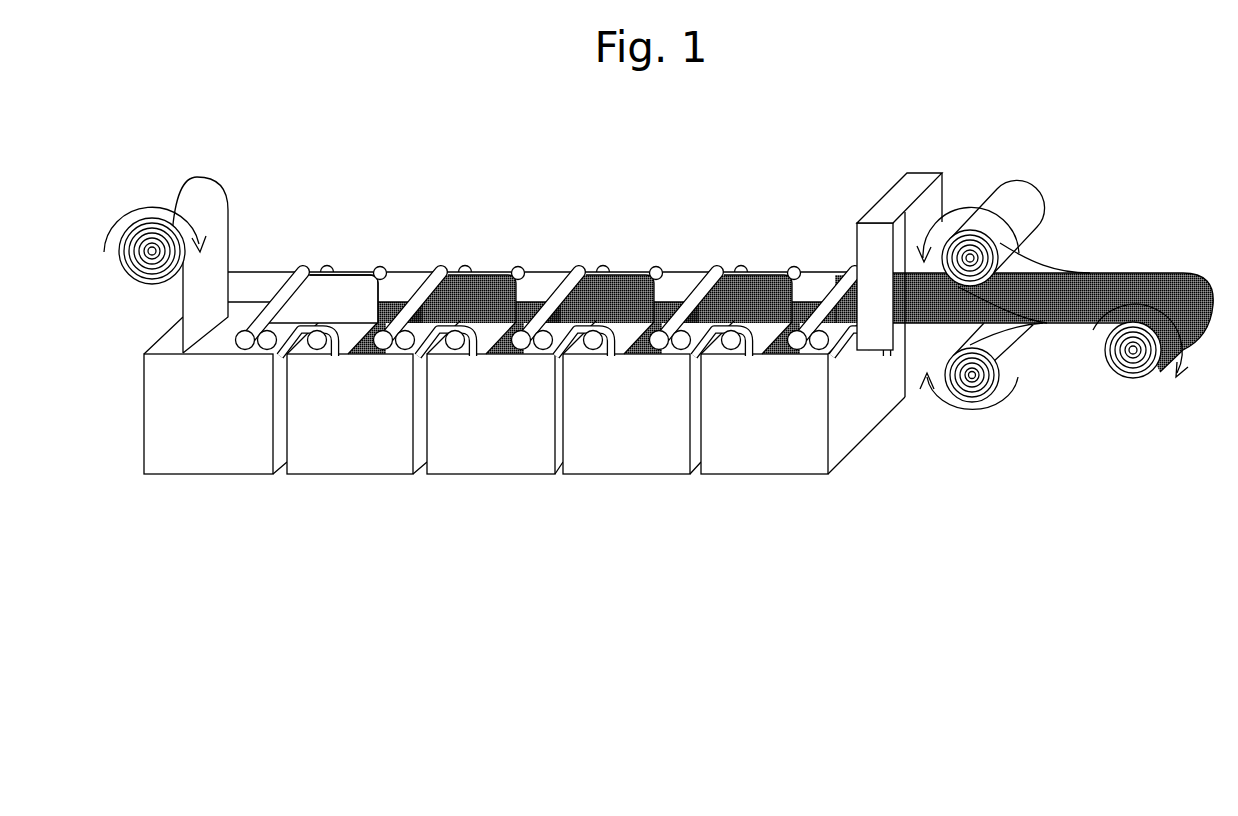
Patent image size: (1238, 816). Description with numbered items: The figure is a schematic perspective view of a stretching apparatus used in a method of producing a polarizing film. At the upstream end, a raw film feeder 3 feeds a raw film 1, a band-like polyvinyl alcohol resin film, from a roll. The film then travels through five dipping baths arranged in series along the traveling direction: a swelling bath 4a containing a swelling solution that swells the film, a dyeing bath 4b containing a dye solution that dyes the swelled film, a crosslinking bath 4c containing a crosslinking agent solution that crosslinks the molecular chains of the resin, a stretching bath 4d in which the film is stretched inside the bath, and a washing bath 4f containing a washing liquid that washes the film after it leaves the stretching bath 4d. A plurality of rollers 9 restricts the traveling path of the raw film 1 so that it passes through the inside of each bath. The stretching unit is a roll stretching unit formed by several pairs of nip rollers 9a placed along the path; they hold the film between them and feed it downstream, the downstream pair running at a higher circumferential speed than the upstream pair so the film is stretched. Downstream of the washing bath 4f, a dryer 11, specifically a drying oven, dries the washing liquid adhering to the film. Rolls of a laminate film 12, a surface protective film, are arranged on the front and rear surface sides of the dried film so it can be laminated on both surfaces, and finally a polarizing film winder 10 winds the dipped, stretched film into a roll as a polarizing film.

The raw film 1 is at (203, 186).
The raw film feeder 3 is at (140, 283).
The swelling bath 4a is at (212, 457).
The dyeing bath 4b is at (353, 457).
The crosslinking bath 4c is at (494, 457).
The stretching bath 4d is at (630, 457).
The washing bath 4f is at (768, 457).
The rollers 9 is at (378, 268).
The nip rollers 9a is at (563, 323).
The polarizing film winder 10 is at (1132, 378).
The dryer 11 is at (898, 192).
The laminate film 12 is at (1027, 195).